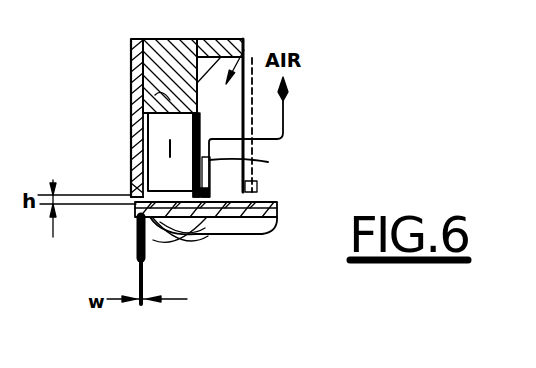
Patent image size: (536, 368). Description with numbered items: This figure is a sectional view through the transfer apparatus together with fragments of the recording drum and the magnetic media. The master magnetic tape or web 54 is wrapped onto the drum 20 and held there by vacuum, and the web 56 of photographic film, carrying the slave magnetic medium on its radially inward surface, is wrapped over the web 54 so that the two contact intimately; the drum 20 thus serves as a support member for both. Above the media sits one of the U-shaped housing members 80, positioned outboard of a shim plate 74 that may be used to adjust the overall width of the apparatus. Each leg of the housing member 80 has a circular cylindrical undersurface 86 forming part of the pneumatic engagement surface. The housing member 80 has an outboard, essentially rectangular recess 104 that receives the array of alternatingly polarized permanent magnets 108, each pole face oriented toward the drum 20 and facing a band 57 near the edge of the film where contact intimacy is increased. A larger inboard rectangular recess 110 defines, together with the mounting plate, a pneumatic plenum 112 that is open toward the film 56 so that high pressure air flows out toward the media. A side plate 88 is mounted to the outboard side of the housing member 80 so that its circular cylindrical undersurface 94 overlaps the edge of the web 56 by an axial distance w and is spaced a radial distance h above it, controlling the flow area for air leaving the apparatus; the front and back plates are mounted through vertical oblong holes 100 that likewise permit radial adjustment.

The drum 20 is at (180, 244).
The master magnetic tape or web 54 is at (280, 216).
The web of photographic film 56 is at (268, 201).
The band 57 is at (185, 235).
The shim plate 74 is at (252, 60).
The housing member 80 is at (170, 38).
The circular cylindrical undersurface 86 is at (518, 35).
The side plate 88 is at (136, 146).
The circular cylindrical undersurface 94 is at (137, 183).
The vertical oblong holes 100 is at (489, 4).
The rectangular recess 104 is at (131, 71).
The permanent magnet 108 is at (133, 110).
The inboard rectangular recess 110 is at (200, 57).
The pneumatic plenum 112 is at (245, 42).